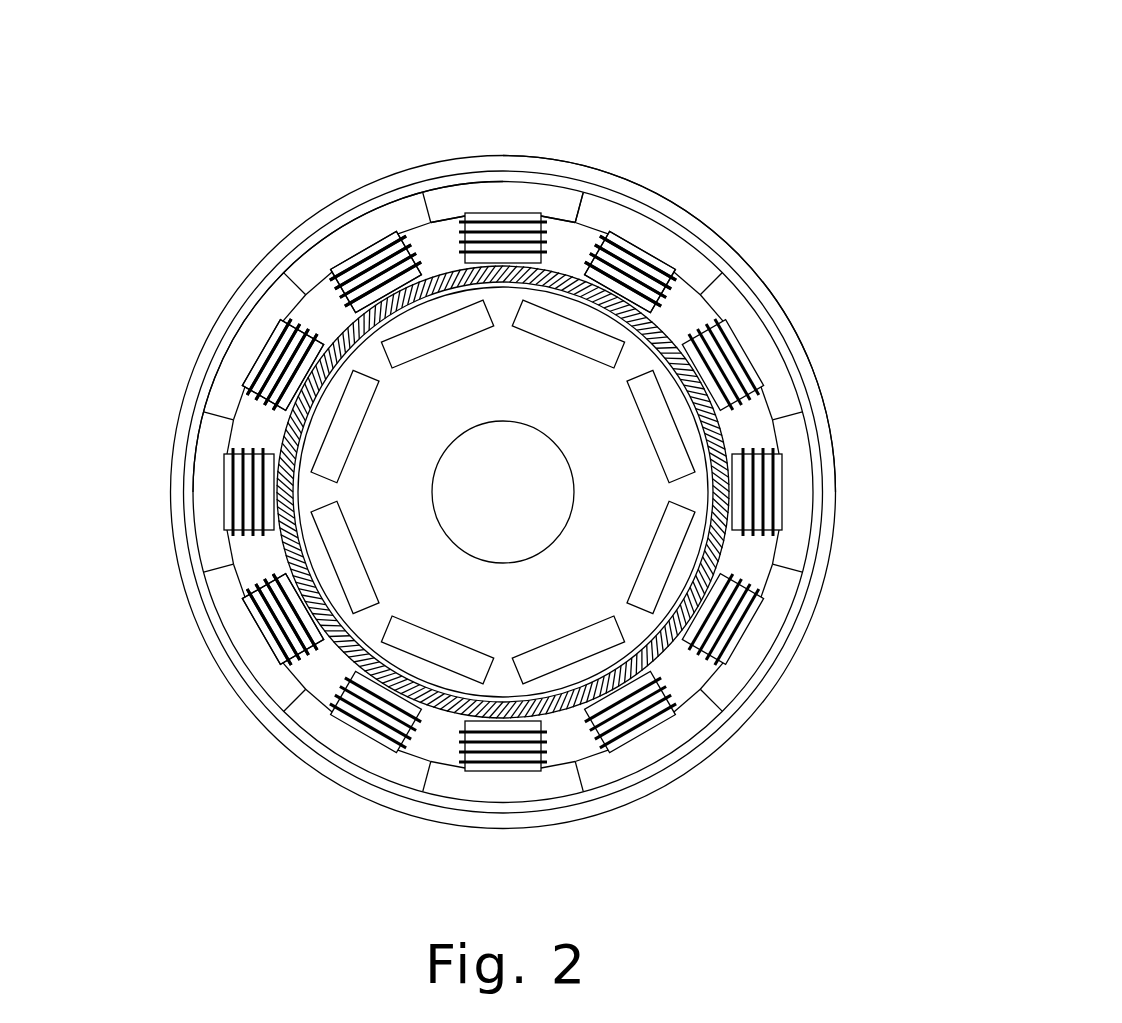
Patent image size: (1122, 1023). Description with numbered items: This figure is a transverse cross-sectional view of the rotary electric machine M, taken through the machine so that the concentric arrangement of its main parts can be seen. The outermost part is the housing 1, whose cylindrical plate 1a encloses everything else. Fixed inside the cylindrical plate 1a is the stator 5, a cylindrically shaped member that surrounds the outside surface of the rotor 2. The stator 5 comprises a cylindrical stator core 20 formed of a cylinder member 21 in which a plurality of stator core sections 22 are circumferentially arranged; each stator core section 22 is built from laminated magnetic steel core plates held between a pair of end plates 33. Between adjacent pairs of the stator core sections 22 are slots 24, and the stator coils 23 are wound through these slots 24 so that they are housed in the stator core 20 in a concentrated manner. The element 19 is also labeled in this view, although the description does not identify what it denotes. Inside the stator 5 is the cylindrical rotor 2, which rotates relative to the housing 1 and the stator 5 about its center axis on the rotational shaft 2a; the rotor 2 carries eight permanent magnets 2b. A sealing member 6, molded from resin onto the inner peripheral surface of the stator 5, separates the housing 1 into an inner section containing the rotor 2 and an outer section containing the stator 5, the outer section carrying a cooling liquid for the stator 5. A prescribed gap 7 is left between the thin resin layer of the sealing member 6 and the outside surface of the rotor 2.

The rotary electric machine M is at (713, 103).
The housing 1 is at (836, 436).
The cylindrical plate 1a is at (790, 320).
The rotor 2 is at (537, 512).
The rotational shaft 2a is at (560, 542).
The permanent magnets 2b is at (685, 533).
The stator 5 is at (462, 168).
The sealing member 6 is at (300, 632).
The gap 7 is at (355, 655).
The stator core segment 19 is at (687, 320).
The stator core 20 is at (686, 265).
The cylinder member 21 is at (190, 460).
The stator core sections 22 is at (600, 222).
The stator coils 23 is at (323, 305).
The slots 24 is at (566, 240).
The end plates 33 is at (405, 222).